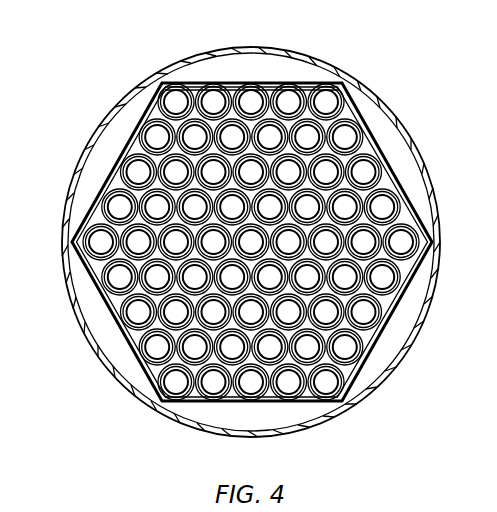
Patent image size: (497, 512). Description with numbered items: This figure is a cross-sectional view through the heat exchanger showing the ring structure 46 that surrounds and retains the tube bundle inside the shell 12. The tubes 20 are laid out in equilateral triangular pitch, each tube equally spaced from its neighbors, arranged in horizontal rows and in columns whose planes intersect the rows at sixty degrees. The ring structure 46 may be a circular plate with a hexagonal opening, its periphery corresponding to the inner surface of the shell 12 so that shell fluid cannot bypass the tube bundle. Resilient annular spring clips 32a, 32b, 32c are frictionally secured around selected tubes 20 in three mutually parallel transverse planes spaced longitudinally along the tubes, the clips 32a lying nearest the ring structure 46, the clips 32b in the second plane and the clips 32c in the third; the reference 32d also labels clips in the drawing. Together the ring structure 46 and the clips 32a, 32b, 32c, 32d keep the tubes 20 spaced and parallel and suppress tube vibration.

The shell 12 is at (415, 345).
The tube 20 is at (190, 84).
The ring structure 46 is at (221, 84).
The spring clips of the first transverse plane 32a is at (148, 103).
The spring clips of the second transverse plane 32b is at (267, 86).
The spring clips of the third transverse plane 32c is at (119, 172).
The fourth tube group 32d is at (101, 217).